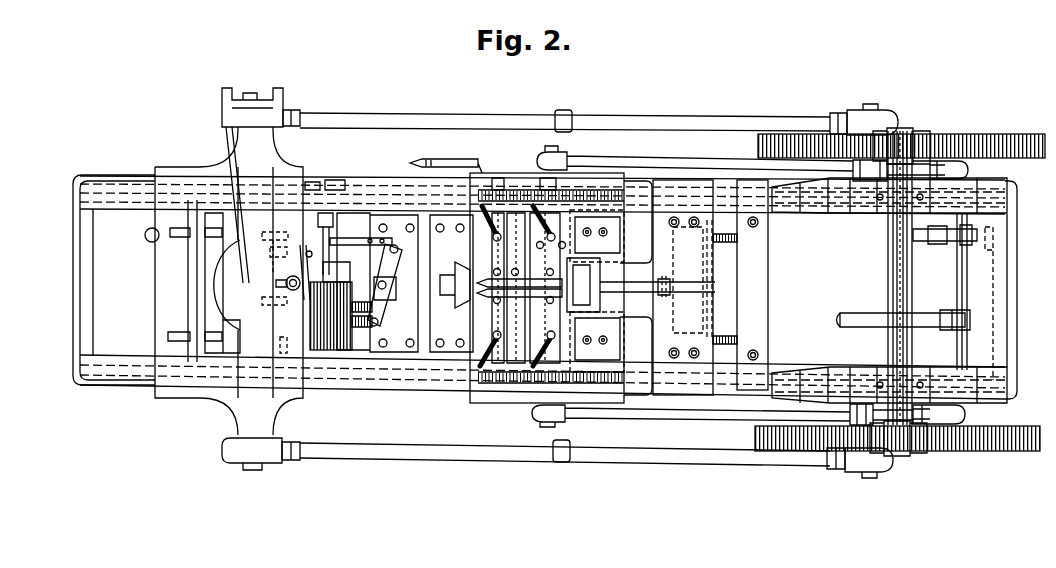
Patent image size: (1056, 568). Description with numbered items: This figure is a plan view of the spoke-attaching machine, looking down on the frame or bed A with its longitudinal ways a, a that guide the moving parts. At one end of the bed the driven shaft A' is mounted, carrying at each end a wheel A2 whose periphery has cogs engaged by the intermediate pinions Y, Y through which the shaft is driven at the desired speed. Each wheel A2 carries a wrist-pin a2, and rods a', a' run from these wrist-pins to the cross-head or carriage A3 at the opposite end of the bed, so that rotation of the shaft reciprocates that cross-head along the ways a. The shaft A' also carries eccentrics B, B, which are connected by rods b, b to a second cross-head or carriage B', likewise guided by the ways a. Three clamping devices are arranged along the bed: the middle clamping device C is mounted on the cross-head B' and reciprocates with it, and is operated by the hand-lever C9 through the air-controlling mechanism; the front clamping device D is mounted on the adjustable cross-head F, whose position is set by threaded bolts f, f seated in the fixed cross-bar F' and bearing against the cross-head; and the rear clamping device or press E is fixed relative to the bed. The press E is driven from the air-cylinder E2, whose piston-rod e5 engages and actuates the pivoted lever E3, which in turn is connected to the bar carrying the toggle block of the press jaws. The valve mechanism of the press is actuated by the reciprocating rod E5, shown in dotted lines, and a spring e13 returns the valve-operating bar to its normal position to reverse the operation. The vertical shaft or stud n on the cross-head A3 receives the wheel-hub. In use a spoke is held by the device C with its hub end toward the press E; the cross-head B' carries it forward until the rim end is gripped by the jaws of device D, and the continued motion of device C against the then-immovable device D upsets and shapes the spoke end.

The frame or bed A is at (101, 280).
The ways a is at (548, 286).
The driven shaft A' is at (889, 278).
The wheel A2 is at (1003, 140).
The cross-head or carriage A3 is at (174, 395).
The rods a' is at (564, 292).
The wrist-pins a2 is at (890, 106).
The eccentrics B is at (948, 292).
The cross-head or carriage B' is at (550, 404).
The rods b is at (659, 170).
The middle clamping device C is at (473, 182).
The hand-lever C9 is at (446, 166).
The front clamping device D is at (601, 278).
The rear clamping device or press E is at (405, 282).
The air-cylinder E2 is at (331, 306).
The pivoted lever E3 is at (383, 280).
The reciprocating rod E5 is at (311, 190).
The piston-rod e5 is at (386, 321).
The spring e13 is at (334, 240).
The cross-head F is at (683, 287).
The fixed cross-bar F' is at (752, 285).
The threaded bolts f is at (725, 243).
The vertical shaft or stud n is at (288, 275).
The pinion Y is at (918, 133).